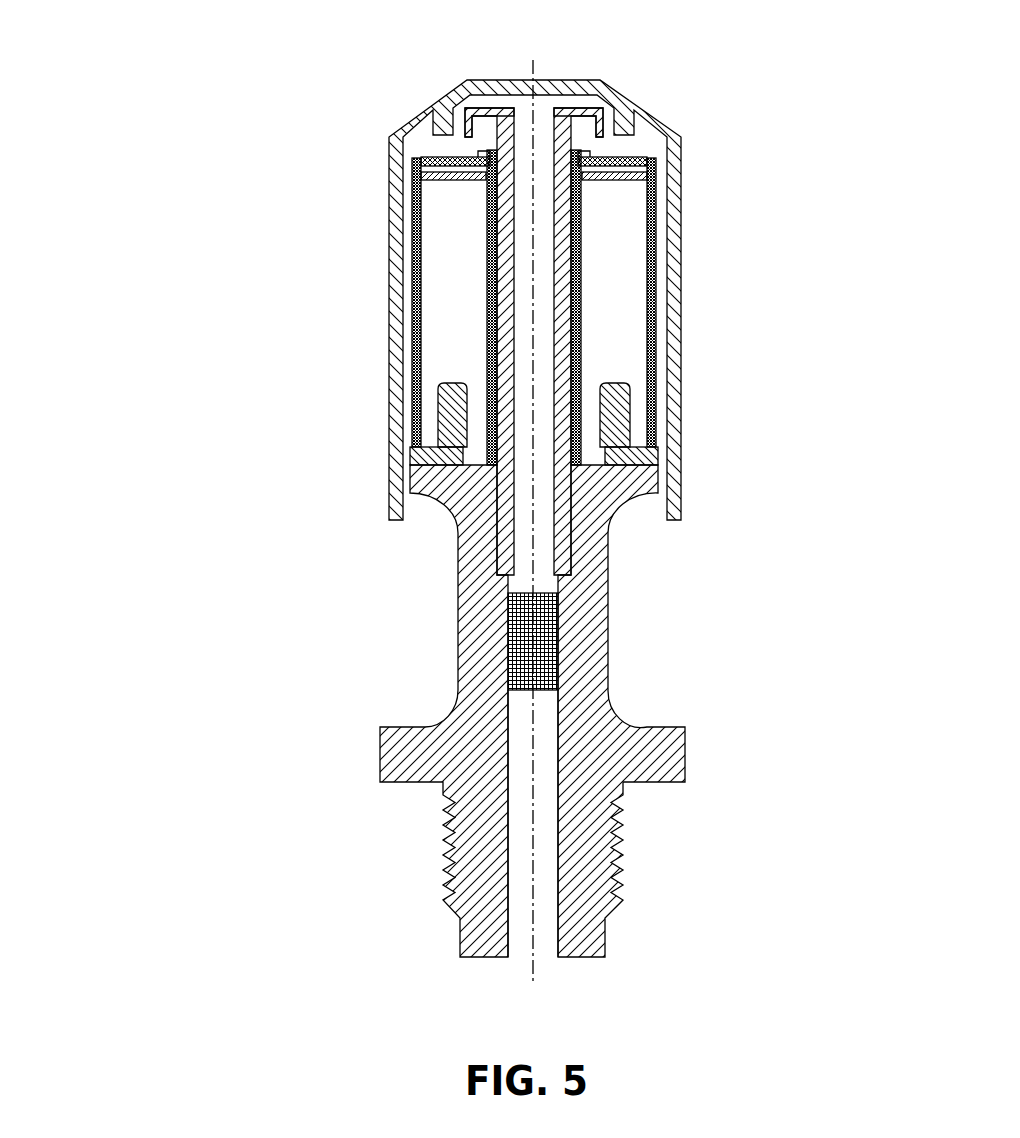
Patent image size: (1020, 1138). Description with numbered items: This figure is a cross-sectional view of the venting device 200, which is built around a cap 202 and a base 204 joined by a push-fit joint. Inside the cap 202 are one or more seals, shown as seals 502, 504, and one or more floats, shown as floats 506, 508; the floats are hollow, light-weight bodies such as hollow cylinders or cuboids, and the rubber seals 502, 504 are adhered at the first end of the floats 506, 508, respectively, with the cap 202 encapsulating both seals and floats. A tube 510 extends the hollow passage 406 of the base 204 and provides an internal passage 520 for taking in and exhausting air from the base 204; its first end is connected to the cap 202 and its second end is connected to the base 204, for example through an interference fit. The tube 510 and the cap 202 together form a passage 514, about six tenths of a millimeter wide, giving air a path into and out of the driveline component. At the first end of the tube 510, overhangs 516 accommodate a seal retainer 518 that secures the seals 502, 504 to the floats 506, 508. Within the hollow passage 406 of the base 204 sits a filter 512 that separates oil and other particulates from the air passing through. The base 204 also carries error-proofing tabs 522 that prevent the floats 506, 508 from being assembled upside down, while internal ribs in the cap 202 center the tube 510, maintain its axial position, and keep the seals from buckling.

The venting device 200 is at (146, 108).
The cap 202 is at (680, 238).
The base 204 is at (585, 600).
The hollow passage 406 is at (532, 730).
The seal 502 is at (625, 152).
The seal 504 is at (425, 170).
The float 506 is at (656, 378).
The float 508 is at (413, 310).
The tube 510 is at (510, 547).
The filter 512 is at (560, 660).
The passage 514 is at (660, 307).
The overhangs 516 is at (470, 122).
The seal retainer 518 is at (580, 160).
The internal passage 520 is at (492, 478).
The error-proofing tabs 522 is at (442, 403).